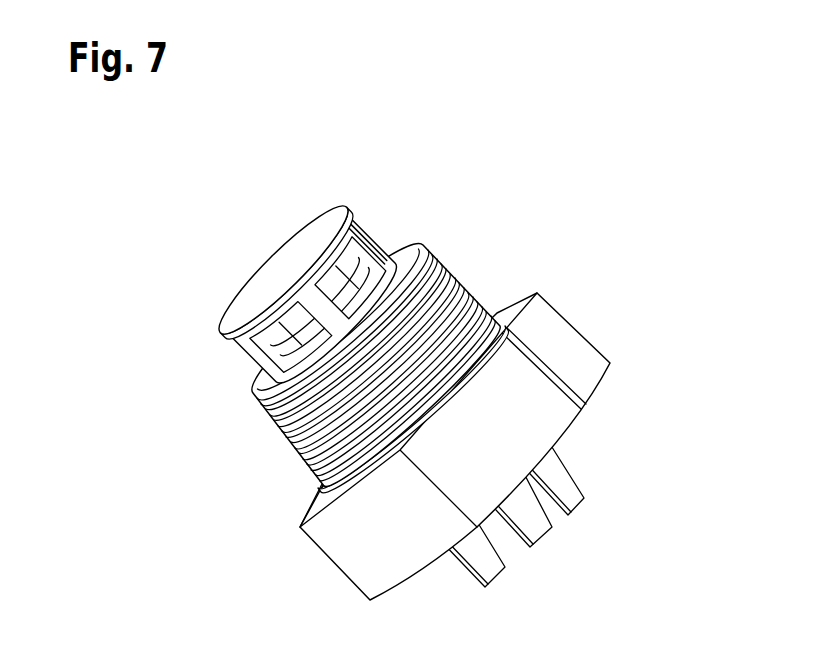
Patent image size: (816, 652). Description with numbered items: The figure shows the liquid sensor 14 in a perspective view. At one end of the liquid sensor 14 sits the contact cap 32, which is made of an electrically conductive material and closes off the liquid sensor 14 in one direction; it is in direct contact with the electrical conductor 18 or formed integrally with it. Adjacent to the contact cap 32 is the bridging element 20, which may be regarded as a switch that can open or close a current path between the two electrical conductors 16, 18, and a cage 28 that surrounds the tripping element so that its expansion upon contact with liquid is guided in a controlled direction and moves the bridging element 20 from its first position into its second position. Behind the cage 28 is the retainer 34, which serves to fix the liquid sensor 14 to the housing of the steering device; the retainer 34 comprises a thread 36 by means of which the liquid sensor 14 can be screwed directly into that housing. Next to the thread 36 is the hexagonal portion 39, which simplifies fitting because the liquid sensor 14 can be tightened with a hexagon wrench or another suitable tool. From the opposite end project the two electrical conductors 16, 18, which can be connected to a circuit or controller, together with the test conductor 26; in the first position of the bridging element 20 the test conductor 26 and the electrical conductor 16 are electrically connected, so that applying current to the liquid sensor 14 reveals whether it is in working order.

The liquid sensor 14 is at (451, 354).
The contact cap 32 is at (302, 238).
The bridging element 20 is at (350, 255).
The cage 28 is at (372, 246).
The retainer 34 is at (414, 342).
The thread 36 is at (472, 288).
The hexagonal portion 39 is at (569, 351).
The test conductor 26 is at (571, 494).
The electrical conductor 16 is at (531, 528).
The electrical conductor 18 is at (486, 567).